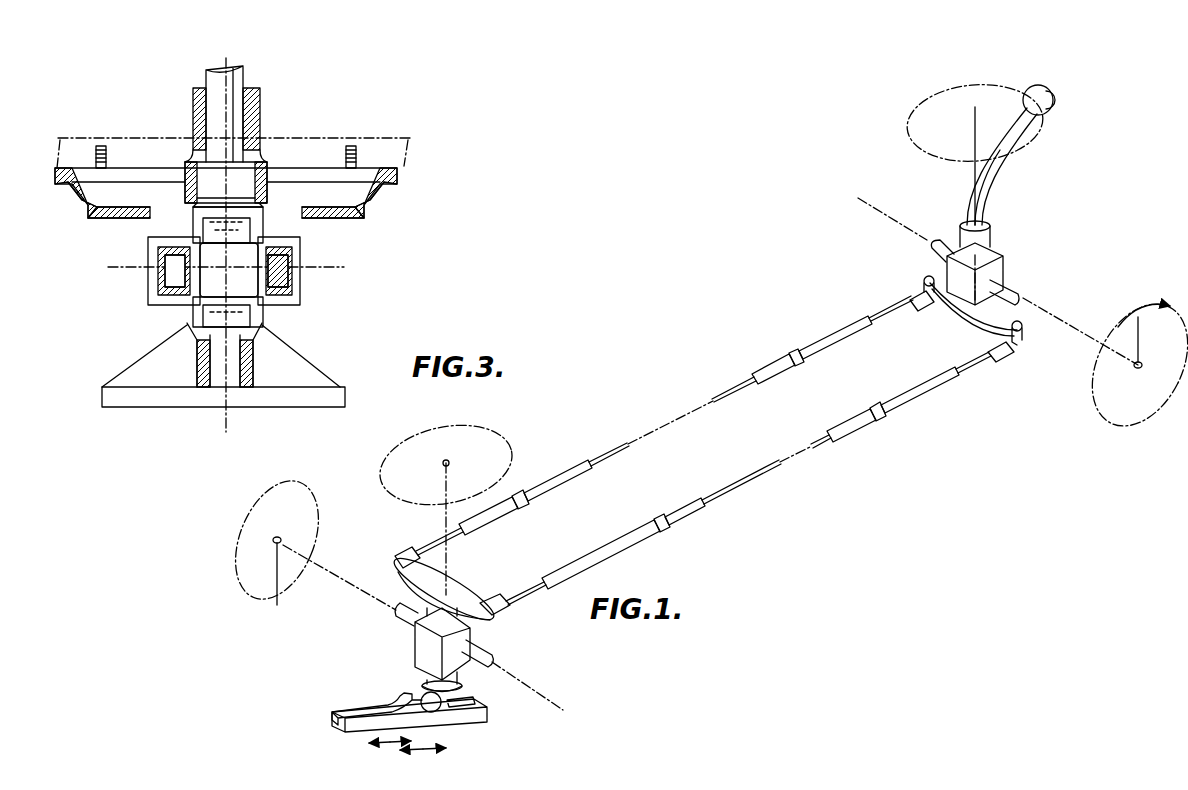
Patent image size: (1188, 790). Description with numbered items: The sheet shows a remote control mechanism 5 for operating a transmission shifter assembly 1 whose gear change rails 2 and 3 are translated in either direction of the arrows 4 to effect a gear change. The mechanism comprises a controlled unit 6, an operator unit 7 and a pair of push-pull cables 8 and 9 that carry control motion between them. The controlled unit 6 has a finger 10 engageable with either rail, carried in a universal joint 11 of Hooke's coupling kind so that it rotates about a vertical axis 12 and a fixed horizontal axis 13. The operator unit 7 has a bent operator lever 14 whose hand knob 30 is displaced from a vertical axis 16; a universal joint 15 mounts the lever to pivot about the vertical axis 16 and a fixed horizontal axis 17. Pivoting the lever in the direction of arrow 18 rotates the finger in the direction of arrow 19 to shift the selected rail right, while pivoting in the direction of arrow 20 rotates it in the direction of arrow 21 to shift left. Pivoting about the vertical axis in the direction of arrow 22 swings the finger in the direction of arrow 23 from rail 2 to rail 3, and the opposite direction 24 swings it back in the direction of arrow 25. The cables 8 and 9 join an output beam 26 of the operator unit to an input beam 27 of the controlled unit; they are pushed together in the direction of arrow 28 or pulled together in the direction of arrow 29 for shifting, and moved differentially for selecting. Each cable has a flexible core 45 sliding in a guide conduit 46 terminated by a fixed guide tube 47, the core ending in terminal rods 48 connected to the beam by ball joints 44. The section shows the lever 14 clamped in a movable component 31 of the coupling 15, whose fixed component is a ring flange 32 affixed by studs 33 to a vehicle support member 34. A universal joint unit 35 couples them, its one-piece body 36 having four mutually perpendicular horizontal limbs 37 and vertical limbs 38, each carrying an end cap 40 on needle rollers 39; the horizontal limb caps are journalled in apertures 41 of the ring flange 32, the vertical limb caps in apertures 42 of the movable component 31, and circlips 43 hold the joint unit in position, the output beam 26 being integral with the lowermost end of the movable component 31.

In FIG. 1, the transmission shifter assembly 1 is at (318, 725).
In FIG. 1, the gear change rail 2 is at (480, 724).
In FIG. 1, the gear change rail 3 is at (345, 712).
In FIG. 1, the arrows 4 is at (405, 753).
In FIG. 1, the remote control mechanism 5 is at (832, 460).
In FIG. 1, the controlled unit 6 is at (403, 657).
In FIG. 3, the operator unit 7 is at (137, 223).
In FIG. 1, the operator unit 7 is at (941, 252).
In FIG. 1, the push-pull cable 8 is at (619, 445).
In FIG. 1, the push-pull cable 9 is at (700, 512).
In FIG. 1, the finger 10 is at (445, 700).
In FIG. 1, the universal joint 11 is at (437, 650).
In FIG. 1, the vertical axis 12 is at (444, 527).
In FIG. 1, the horizontal axis 13 is at (362, 592).
In FIG. 3, the operator lever 14 is at (240, 105).
In FIG. 1, the operator lever 14 is at (1010, 148).
In FIG. 3, the universal joint 15 is at (140, 307).
In FIG. 1, the universal joint 15 is at (958, 270).
In FIG. 3, the vertical axis 16 is at (206, 78).
In FIG. 1, the vertical axis 16 is at (925, 147).
In FIG. 3, the horizontal axis 17 is at (317, 273).
In FIG. 1, the horizontal axis 17 is at (1080, 358).
In FIG. 1, the arrow 18 is at (1160, 302).
In FIG. 1, the arrow 19 is at (298, 577).
In FIG. 1, the arrow 20 is at (1118, 328).
In FIG. 1, the arrow 21 is at (245, 596).
In FIG. 1, the arrow 22 is at (1042, 138).
In FIG. 1, the arrow 23 is at (431, 500).
In FIG. 1, the direction 24 is at (1012, 96).
In FIG. 1, the arrow 25 is at (444, 466).
In FIG. 1, the output beam 26 is at (983, 320).
In FIG. 1, the input beam 27 is at (455, 595).
In FIG. 1, the arrow 28 is at (842, 385).
In FIG. 1, the arrow 29 is at (937, 394).
In FIG. 1, the hand knob 30 is at (1054, 100).
In FIG. 3, the movable component 31 is at (256, 128).
In FIG. 3, the ring flange 32 is at (360, 197).
In FIG. 3, the studs 33 is at (112, 157).
In FIG. 3, the support member 34 is at (78, 152).
In FIG. 3, the universal joint unit 35 is at (153, 311).
In FIG. 3, the one-piece body 36 is at (237, 263).
In FIG. 3, the horizontal limbs 37 is at (167, 273).
In FIG. 3, the vertical limbs 38 is at (278, 223).
In FIG. 3, the needle rollers 39 is at (303, 327).
In FIG. 3, the end cap 40 is at (280, 300).
In FIG. 3, the apertures 41 is at (288, 313).
In FIG. 3, the apertures 42 is at (243, 198).
In FIG. 3, the circlips 43 is at (207, 198).
In FIG. 1, the ball joints 44 is at (924, 281).
In FIG. 1, the flexible core 45 is at (733, 390).
In FIG. 1, the guide conduit 46 is at (772, 365).
In FIG. 1, the fixed guide tube 47 is at (802, 348).
In FIG. 1, the terminal rods 48 is at (905, 305).